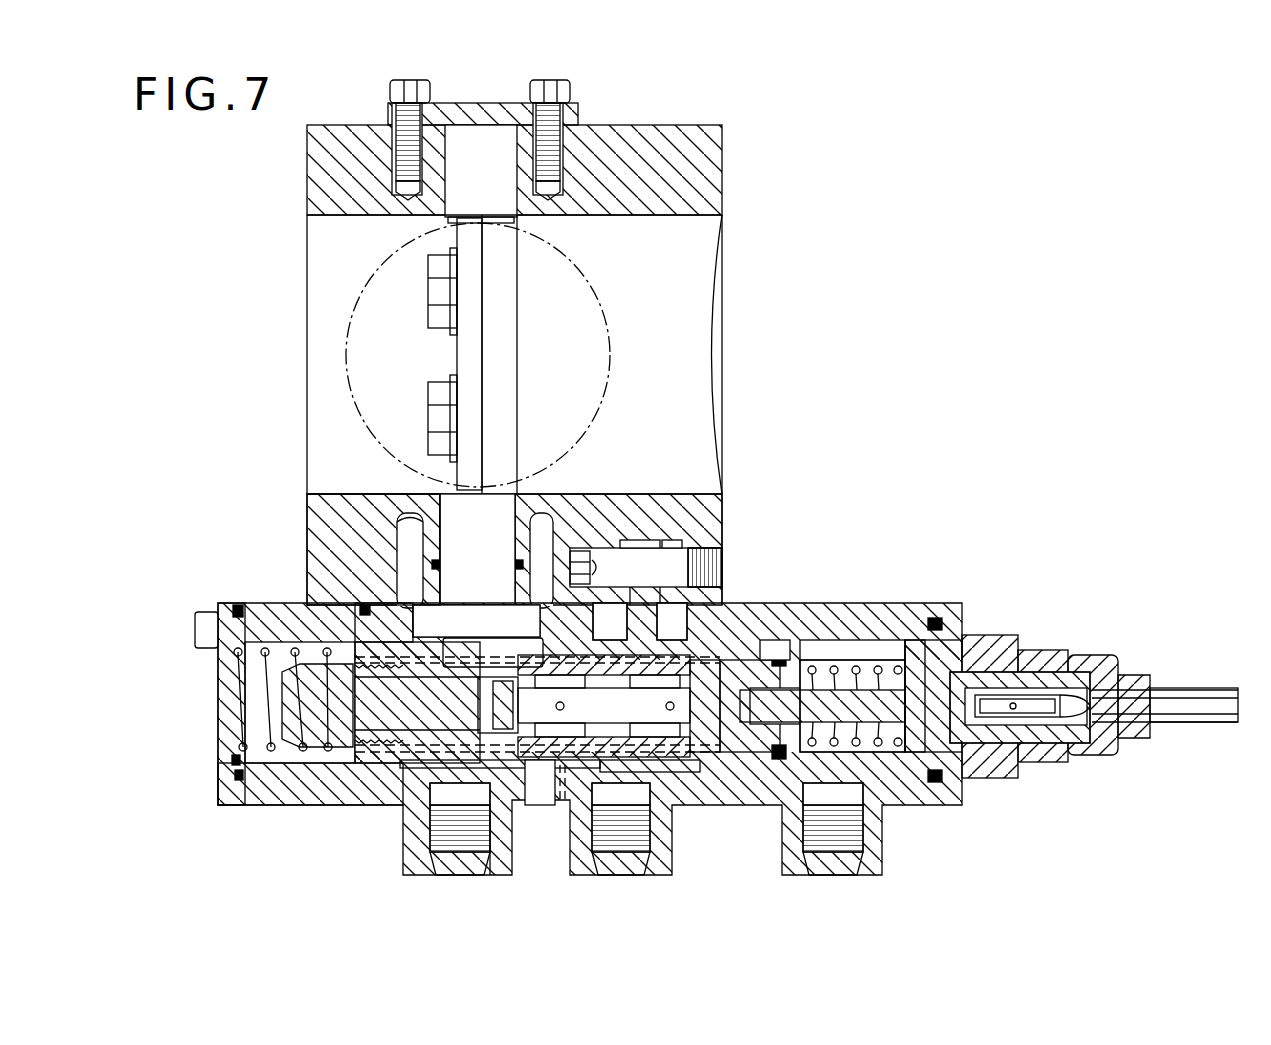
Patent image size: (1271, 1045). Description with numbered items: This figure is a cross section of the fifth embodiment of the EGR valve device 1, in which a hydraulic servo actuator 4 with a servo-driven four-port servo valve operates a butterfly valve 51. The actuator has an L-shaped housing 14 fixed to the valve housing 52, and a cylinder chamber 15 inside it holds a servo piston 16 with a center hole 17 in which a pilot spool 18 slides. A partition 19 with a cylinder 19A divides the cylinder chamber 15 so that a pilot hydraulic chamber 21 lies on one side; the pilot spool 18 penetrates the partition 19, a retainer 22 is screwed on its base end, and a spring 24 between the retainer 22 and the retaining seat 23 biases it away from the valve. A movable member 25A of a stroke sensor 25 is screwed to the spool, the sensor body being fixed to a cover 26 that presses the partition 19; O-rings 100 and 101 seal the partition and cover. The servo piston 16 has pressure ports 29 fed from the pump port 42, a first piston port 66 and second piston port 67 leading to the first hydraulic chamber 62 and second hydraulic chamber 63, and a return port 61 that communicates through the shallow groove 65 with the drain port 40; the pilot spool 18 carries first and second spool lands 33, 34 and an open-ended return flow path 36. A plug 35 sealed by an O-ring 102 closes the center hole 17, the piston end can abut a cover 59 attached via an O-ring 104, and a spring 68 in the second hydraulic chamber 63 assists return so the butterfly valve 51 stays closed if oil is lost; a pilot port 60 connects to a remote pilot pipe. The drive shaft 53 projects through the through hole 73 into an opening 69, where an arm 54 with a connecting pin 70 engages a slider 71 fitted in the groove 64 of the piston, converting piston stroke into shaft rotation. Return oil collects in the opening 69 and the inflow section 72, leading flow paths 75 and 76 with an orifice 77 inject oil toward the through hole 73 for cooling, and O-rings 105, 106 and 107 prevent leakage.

The EGR valve device 1 is at (1080, 380).
The hydraulic servo actuator 4 is at (952, 575).
The housing 14 is at (832, 615).
The cylinder chamber 15 is at (715, 755).
The servo piston 16 is at (545, 805).
The center hole 17 is at (400, 775).
The pilot spool 18 is at (742, 660).
The partition 19 is at (790, 688).
The cylinder 19A is at (770, 640).
The pilot hydraulic chamber 21 is at (905, 770).
The retainer 22 is at (938, 785).
The retaining seat 23 is at (778, 762).
The spring 24 is at (875, 660).
The stroke sensor 25 is at (1120, 680).
The movable member 25A is at (1000, 672).
The cover 26 is at (968, 635).
The pressure ports 29 is at (675, 772).
The first spool land 33 is at (610, 621).
The second spool land 34 is at (673, 621).
The plug 35 is at (292, 747).
The return flow path 36 is at (584, 706).
The drain port 40 is at (462, 876).
The pump port 42 is at (630, 876).
The butterfly valve 51 is at (600, 366).
The valve housing 52 is at (688, 130).
The drive shaft 53 is at (505, 515).
The arm 54 is at (392, 604).
The cover 59 is at (215, 720).
The pilot port 60 is at (835, 876).
The return port 61 is at (500, 860).
The first hydraulic chamber 62 is at (775, 762).
The second hydraulic chamber 63 is at (250, 770).
The groove 64 is at (452, 618).
The shallow groove 65 is at (515, 770).
The first piston port 66 is at (565, 805).
The second piston port 67 is at (674, 580).
The spring 68 is at (240, 700).
The opening 69 is at (375, 612).
The connecting pin 70 is at (596, 560).
The slider 71 is at (646, 567).
The inflow section 72 is at (625, 541).
The through hole 73 is at (440, 523).
The leading flow path 75 is at (646, 580).
The leading flow path 76 is at (704, 548).
The orifice 77 is at (668, 541).
The O-ring 100 is at (810, 660).
The O-ring 101 is at (935, 618).
The O-ring 102 is at (385, 765).
The O-ring 104 is at (230, 778).
The O-ring 105 is at (360, 610).
The O-ring 106 is at (447, 572).
The O-ring 107 is at (724, 550).